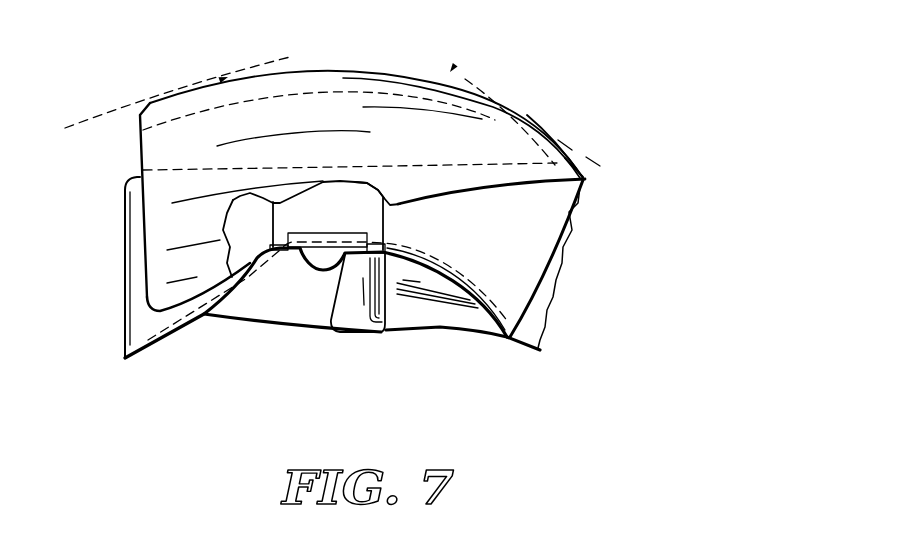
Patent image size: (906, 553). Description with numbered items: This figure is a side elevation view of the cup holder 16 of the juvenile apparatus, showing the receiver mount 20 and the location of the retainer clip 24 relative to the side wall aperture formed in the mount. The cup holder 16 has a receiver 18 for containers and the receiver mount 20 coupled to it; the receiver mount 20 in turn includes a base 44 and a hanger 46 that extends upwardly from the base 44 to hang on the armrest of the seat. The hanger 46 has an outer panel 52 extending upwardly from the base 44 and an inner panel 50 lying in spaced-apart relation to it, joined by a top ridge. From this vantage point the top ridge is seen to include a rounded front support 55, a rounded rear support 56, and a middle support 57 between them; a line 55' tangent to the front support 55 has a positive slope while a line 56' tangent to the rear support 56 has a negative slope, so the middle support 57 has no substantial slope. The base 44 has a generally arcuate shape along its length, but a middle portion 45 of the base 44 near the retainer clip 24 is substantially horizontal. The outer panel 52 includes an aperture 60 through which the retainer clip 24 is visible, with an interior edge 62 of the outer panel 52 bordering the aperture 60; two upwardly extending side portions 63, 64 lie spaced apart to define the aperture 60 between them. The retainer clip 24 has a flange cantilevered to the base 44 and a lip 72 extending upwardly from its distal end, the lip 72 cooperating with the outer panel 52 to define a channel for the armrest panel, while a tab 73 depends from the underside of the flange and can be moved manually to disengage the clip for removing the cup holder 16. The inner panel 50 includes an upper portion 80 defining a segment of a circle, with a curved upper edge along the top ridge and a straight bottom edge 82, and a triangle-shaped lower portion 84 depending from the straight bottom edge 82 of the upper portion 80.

The cup holder 16 is at (660, 204).
The receiver 18 is at (120, 192).
The receiver mount 20 is at (136, 152).
The retainer clip 24 is at (334, 216).
The base 44 is at (201, 317).
The middle portion 45 is at (291, 256).
The hanger 46 is at (592, 177).
The inner panel 50 is at (160, 203).
The outer panel 52 is at (507, 263).
The front support 55 is at (366, 102).
The line tangent to front support 55' is at (177, 81).
The rear support 56 is at (570, 133).
The line tangent to rear support 56' is at (525, 93).
The middle support 57 is at (357, 82).
The aperture 60 is at (313, 204).
The interior edge 62 is at (288, 199).
The side portion 63 is at (530, 238).
The side portion 64 is at (150, 317).
The lip 72 is at (372, 210).
The tab 73 is at (334, 326).
The upper portion 80 is at (265, 108).
The straight bottom edge 82 is at (183, 163).
The lower portion 84 is at (160, 270).